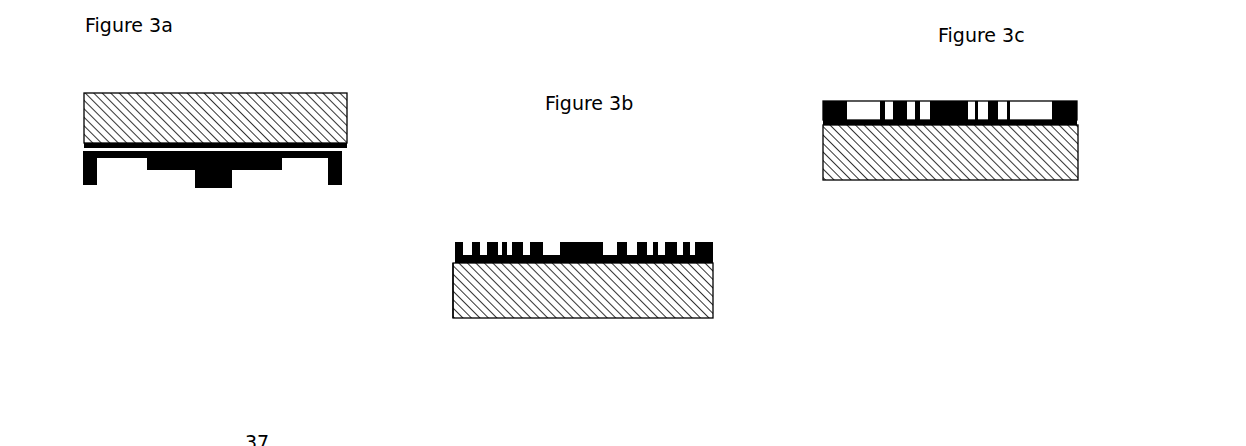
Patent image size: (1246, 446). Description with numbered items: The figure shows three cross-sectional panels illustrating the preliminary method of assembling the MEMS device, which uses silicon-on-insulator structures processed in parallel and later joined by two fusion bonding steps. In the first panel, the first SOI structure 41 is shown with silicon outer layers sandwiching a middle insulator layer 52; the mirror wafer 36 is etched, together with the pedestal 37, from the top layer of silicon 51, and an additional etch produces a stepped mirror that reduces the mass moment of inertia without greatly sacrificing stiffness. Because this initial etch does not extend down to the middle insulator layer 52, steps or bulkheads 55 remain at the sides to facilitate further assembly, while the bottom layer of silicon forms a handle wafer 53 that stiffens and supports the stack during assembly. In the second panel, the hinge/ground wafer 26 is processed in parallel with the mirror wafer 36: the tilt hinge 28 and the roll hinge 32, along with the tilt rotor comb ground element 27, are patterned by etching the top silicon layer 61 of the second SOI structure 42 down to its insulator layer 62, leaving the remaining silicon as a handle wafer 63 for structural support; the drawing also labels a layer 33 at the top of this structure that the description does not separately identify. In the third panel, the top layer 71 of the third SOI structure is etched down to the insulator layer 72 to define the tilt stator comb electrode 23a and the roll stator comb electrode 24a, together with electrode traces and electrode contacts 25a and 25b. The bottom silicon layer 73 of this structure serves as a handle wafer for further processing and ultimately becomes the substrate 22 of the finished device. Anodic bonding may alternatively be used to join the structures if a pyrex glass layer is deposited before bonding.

In FIG. 3A, the first SOI structure 41 is at (267, 104).
In FIG. 3A, the handle wafer 53 is at (266, 104).
In FIG. 3A, the middle insulator layer 52 is at (342, 150).
In FIG. 3A, the top layer of silicon 51 is at (228, 200).
In FIG. 3A, the steps/bulkheads 55 is at (92, 186).
In FIG. 3A, the mirror wafer 36 is at (170, 164).
In FIG. 3A, the pedestal 37 is at (208, 188).
In FIG. 3B, the hinge/ground wafer 26 is at (581, 208).
In FIG. 3B, the tilt rotor comb ground element 27 is at (610, 220).
In FIG. 3B, the tilt hinge 28 is at (567, 242).
In FIG. 3B, the roll hinge 32 is at (477, 242).
In FIG. 3B, the layer 33 is at (455, 250).
In FIG. 3B, the second SOI structure 42 is at (629, 325).
In FIG. 3B, the top silicon layer 61 is at (593, 273).
In FIG. 3B, the insulator layer 62 is at (455, 263).
In FIG. 3B, the handle wafer 63 is at (600, 307).
In FIG. 3C, the substrate 22 is at (1047, 168).
In FIG. 3C, the tilt stator comb electrode 23a is at (978, 89).
In FIG. 3C, the roll stator comb electrode 24a is at (948, 102).
In FIG. 3C, the electrode trace and electrode contact 25a is at (823, 106).
In FIG. 3C, the electrode trace and electrode contact 25b is at (1070, 102).
In FIG. 3C, the top layer 71 is at (950, 90).
In FIG. 3C, the insulator layer 72 is at (1078, 120).
In FIG. 3C, the bottom silicon layer 73 is at (962, 152).